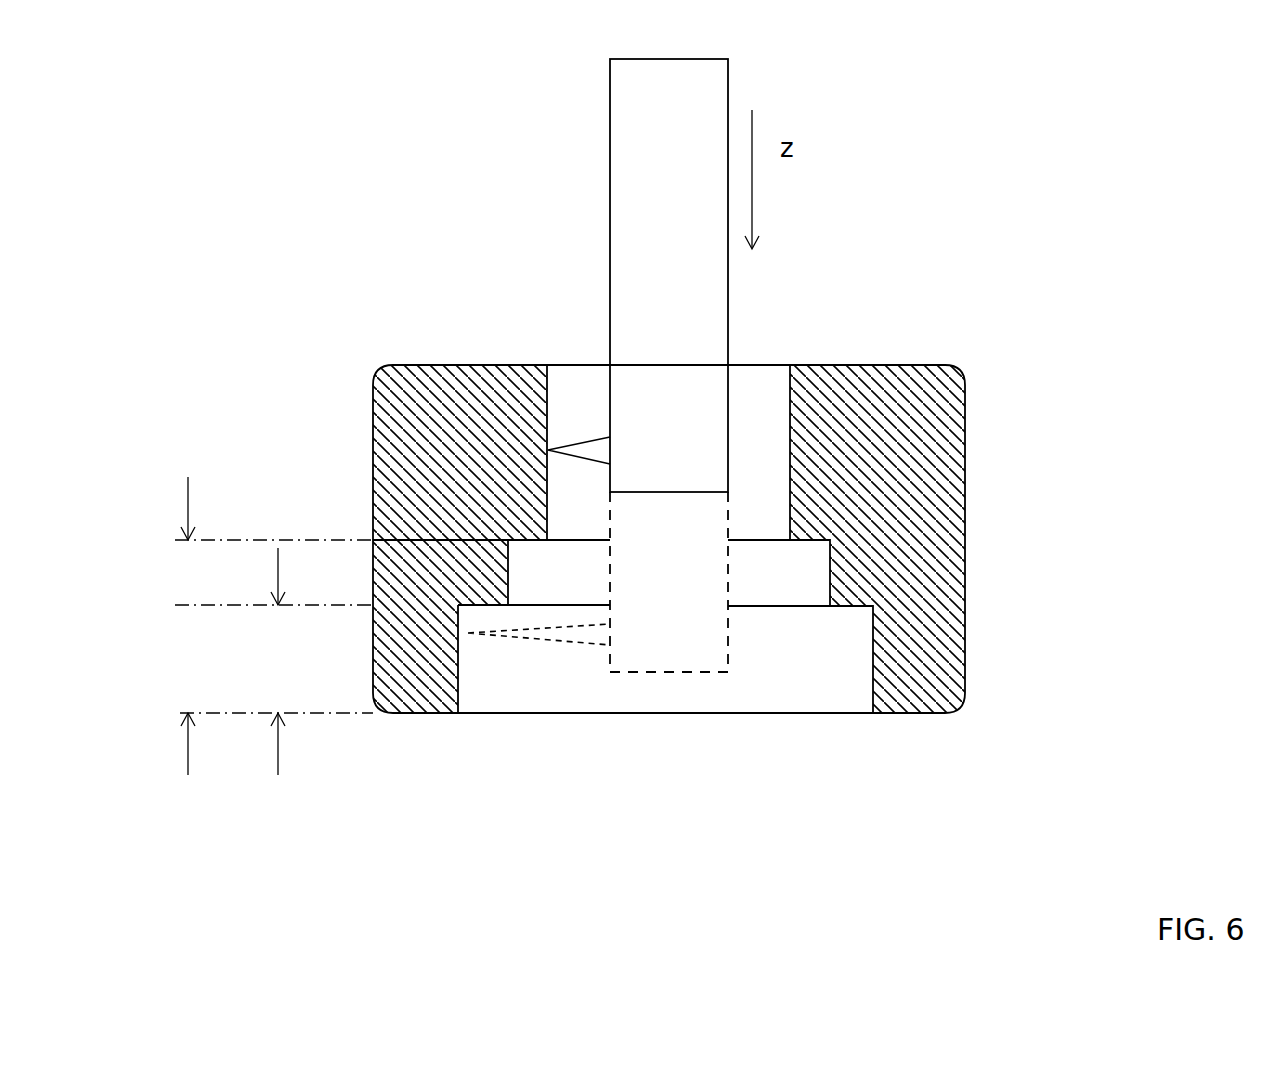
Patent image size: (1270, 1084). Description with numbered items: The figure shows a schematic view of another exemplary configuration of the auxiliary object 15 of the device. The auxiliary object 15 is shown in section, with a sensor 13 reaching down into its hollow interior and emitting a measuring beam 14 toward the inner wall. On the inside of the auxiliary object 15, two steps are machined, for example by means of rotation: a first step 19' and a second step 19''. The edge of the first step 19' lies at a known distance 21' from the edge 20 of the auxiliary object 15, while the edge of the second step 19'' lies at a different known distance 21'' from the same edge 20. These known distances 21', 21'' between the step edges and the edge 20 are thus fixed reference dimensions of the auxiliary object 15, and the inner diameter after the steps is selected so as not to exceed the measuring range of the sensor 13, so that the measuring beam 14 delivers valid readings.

The sensor 13 is at (702, 268).
The measuring beam 14 is at (560, 627).
The auxiliary object 15 is at (910, 398).
The first step 19' is at (943, 602).
The second step 19'' is at (924, 517).
The edge of the auxiliary object 20 is at (920, 705).
The known distance 21' is at (274, 689).
The known distance 21'' is at (264, 653).